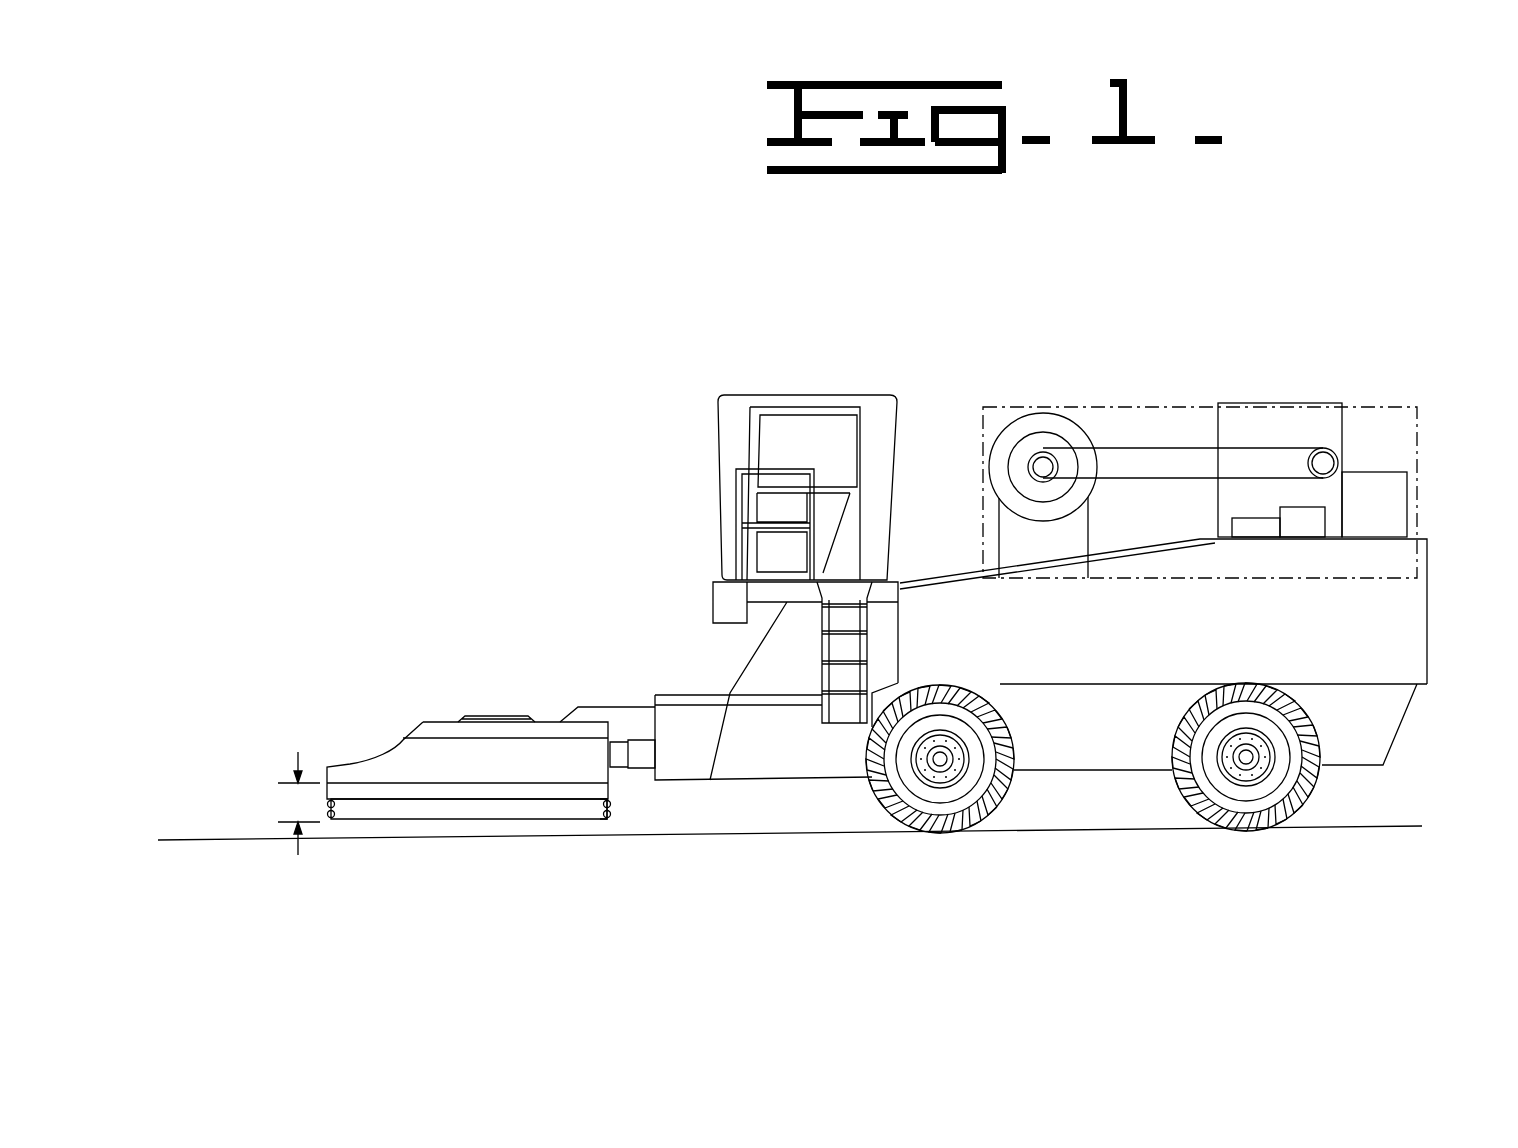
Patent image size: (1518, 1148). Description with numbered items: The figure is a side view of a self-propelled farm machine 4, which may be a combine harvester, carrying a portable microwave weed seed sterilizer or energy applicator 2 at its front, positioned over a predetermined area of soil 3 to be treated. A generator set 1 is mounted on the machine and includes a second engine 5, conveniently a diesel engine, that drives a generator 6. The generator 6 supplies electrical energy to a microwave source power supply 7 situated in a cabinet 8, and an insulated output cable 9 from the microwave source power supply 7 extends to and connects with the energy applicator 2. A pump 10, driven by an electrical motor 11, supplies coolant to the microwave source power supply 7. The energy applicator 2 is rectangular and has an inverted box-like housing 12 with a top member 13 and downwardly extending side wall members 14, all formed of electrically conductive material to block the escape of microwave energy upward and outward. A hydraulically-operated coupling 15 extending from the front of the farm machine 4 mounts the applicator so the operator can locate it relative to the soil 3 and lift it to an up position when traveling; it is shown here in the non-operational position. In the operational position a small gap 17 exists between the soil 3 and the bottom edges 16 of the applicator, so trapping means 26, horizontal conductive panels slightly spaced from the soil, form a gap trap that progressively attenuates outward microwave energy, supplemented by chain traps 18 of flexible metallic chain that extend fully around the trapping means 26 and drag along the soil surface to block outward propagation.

The generator set 1 is at (1193, 357).
The portable microwave weed seed sterilizer or energy applicator 2 is at (395, 657).
The soil 3 is at (170, 838).
The self-propelled farm machine 4 is at (717, 360).
The second engine 5 is at (1342, 423).
The generator 6 is at (1013, 430).
The microwave source power supply 7 is at (1402, 447).
The cabinet 8 is at (1408, 498).
The insulated output cable 9 is at (1208, 540).
The pump 10 is at (1313, 515).
The electrical motor 11 is at (1248, 525).
The inverted box-like housing 12 is at (522, 752).
The top member 13 is at (445, 718).
The side wall members 14 is at (608, 728).
The hydraulically-operated coupling 15 is at (640, 768).
The bottom edges 16 is at (368, 783).
The gap 17 is at (299, 803).
The chain traps 18 is at (612, 812).
The trapping means 26 is at (412, 808).